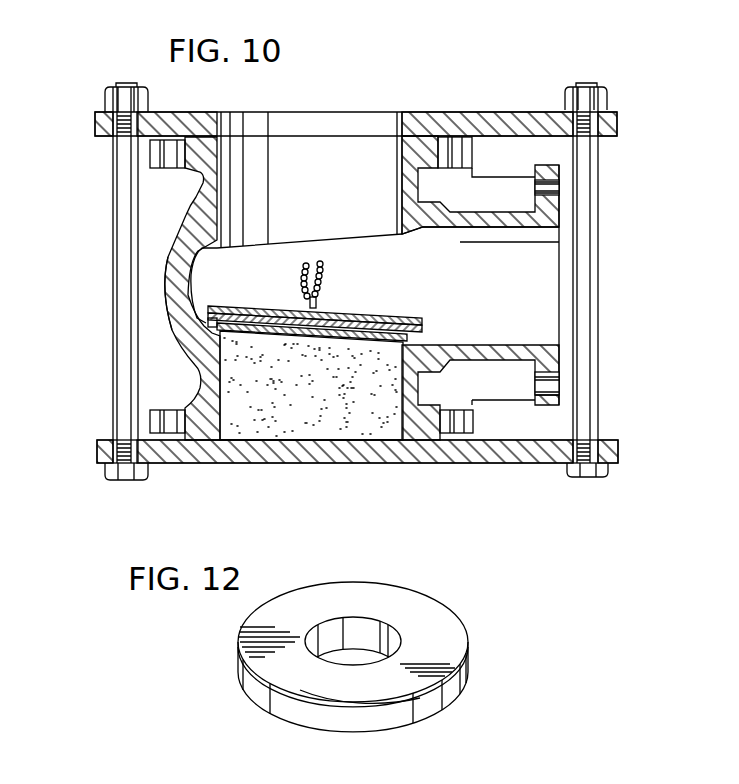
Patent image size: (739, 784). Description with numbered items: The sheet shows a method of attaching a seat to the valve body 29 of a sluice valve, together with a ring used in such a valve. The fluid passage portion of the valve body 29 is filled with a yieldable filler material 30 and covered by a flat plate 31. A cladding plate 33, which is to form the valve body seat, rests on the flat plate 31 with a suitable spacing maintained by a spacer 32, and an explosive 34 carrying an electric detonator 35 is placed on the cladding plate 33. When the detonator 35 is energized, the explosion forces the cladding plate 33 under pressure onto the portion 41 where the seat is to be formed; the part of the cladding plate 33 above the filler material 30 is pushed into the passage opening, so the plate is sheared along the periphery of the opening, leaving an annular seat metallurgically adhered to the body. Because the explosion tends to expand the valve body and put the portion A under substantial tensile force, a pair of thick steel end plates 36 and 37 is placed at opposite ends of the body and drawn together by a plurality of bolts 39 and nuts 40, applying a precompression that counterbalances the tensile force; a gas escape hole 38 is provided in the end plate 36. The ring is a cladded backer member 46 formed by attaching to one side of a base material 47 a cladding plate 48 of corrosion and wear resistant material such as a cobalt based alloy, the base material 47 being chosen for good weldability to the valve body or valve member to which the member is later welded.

In FIG. 10, the valve body 29 is at (162, 265).
In FIG. 10, the filler material 30 is at (287, 427).
In FIG. 10, the flat plate 31 is at (376, 346).
In FIG. 10, the spacer 32 is at (192, 337).
In FIG. 10, the cladding plate 33 is at (423, 328).
In FIG. 10, the explosive 34 is at (383, 315).
In FIG. 10, the electric detonator 35 is at (318, 300).
In FIG. 10, the end plate 36 is at (618, 122).
In FIG. 10, the end plate 37 is at (103, 450).
In FIG. 10, the gas escape hole 38 is at (332, 114).
In FIG. 10, the bolt 39 is at (120, 209).
In FIG. 10, the nut 40 is at (103, 107).
In FIG. 10, the seat portion 41 is at (218, 328).
In FIG. 10, the portion subjected to tensile force A is at (163, 303).
In FIG. 12, the cladded backer member 46 is at (465, 609).
In FIG. 12, the base material 47 is at (444, 703).
In FIG. 12, the cladding plate 48 is at (452, 648).